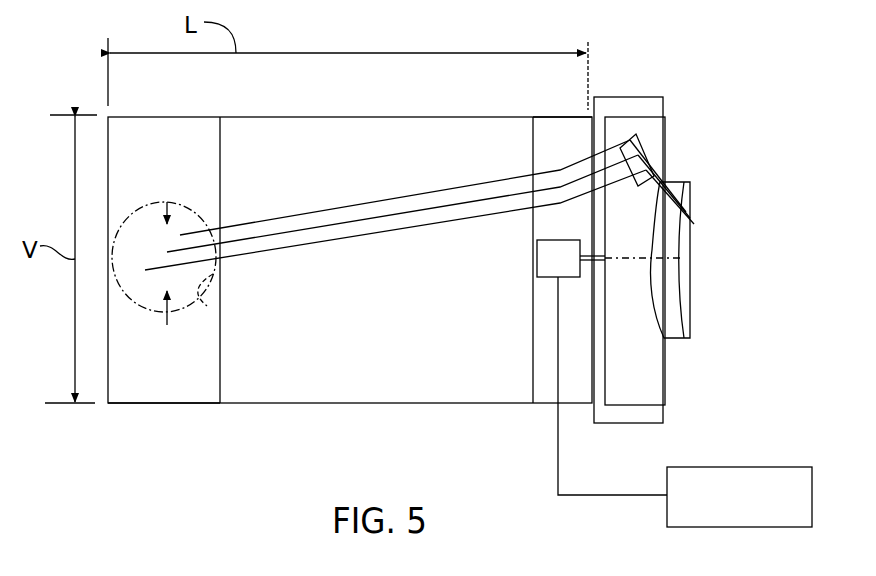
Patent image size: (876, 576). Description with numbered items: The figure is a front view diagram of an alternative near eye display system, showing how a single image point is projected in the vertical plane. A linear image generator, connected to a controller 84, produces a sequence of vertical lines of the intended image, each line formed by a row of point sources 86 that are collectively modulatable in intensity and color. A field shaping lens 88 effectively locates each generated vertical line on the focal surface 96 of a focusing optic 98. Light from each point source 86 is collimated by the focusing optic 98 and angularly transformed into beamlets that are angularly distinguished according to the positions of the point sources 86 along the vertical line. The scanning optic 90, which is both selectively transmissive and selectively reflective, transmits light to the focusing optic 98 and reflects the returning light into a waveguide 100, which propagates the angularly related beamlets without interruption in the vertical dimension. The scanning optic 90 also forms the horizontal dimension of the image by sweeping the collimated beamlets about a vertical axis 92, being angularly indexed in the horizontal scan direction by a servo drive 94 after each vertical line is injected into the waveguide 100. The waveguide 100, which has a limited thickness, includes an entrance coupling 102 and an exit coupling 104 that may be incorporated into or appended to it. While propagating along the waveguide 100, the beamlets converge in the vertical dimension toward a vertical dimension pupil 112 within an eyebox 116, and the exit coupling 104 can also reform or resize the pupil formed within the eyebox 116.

The controller 84 is at (751, 514).
The point sources 86 is at (693, 210).
The field shaping lens 88 is at (685, 298).
The scanning optic 90 is at (649, 341).
The vertical axis 92 is at (638, 256).
The servo drive 94 is at (542, 260).
The focal surface 96 is at (685, 183).
The focusing optic 98 is at (637, 102).
The waveguide 100 is at (398, 312).
The entrance coupling 102 is at (550, 143).
The exit coupling 104 is at (178, 372).
The vertical dimension pupil 112 is at (160, 192).
The eyebox 116 is at (198, 300).